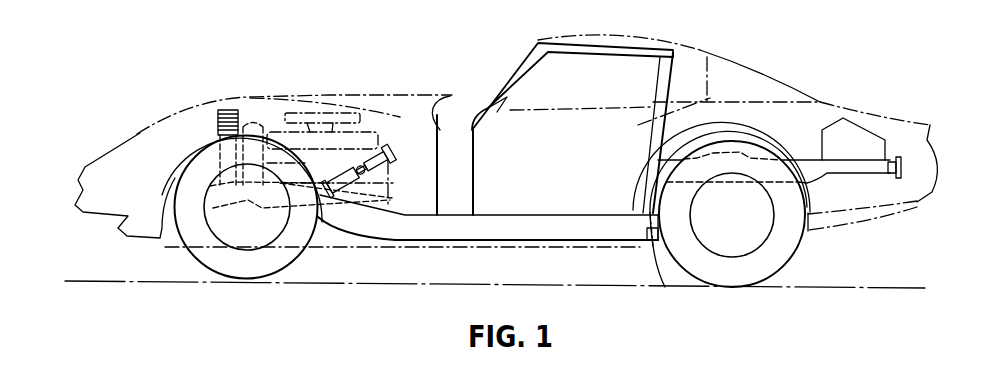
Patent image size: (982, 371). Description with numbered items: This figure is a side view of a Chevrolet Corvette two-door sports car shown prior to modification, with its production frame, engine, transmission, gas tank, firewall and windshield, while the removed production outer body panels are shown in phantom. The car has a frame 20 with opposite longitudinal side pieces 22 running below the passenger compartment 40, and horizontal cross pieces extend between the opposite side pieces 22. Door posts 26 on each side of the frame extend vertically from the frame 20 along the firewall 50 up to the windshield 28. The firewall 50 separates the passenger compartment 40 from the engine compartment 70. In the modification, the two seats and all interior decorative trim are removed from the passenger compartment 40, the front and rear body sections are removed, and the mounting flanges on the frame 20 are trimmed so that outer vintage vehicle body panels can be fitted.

The frame 20 is at (368, 220).
The longitudinal side pieces 22 is at (650, 232).
The door posts 26 is at (458, 192).
The windshield 28 is at (507, 62).
The passenger compartment 40 is at (596, 177).
The firewall 50 is at (437, 113).
The engine compartment 70 is at (424, 155).